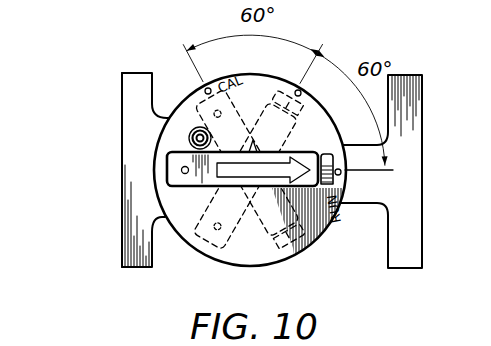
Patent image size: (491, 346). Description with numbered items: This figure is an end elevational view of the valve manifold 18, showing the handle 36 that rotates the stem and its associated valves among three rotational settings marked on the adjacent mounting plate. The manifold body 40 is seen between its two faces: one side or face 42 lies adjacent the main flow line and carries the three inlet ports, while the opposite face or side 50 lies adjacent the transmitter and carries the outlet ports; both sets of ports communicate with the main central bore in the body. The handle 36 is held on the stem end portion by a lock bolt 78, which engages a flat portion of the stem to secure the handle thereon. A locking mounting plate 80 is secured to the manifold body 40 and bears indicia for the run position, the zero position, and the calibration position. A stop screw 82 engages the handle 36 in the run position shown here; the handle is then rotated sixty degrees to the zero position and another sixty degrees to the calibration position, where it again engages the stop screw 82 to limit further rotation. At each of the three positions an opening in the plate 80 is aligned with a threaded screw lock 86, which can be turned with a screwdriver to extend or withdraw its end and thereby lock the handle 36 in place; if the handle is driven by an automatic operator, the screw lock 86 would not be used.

The manifold 18 is at (272, 195).
The handle 36 is at (159, 163).
The manifold body 40 is at (132, 127).
The side or face 42 is at (423, 198).
The opposite face or side 50 is at (122, 171).
The lock bolt 78 is at (331, 156).
The locking mounting plate 80 is at (309, 103).
The stop screw 82 is at (195, 128).
The threaded screw lock 86 is at (186, 174).